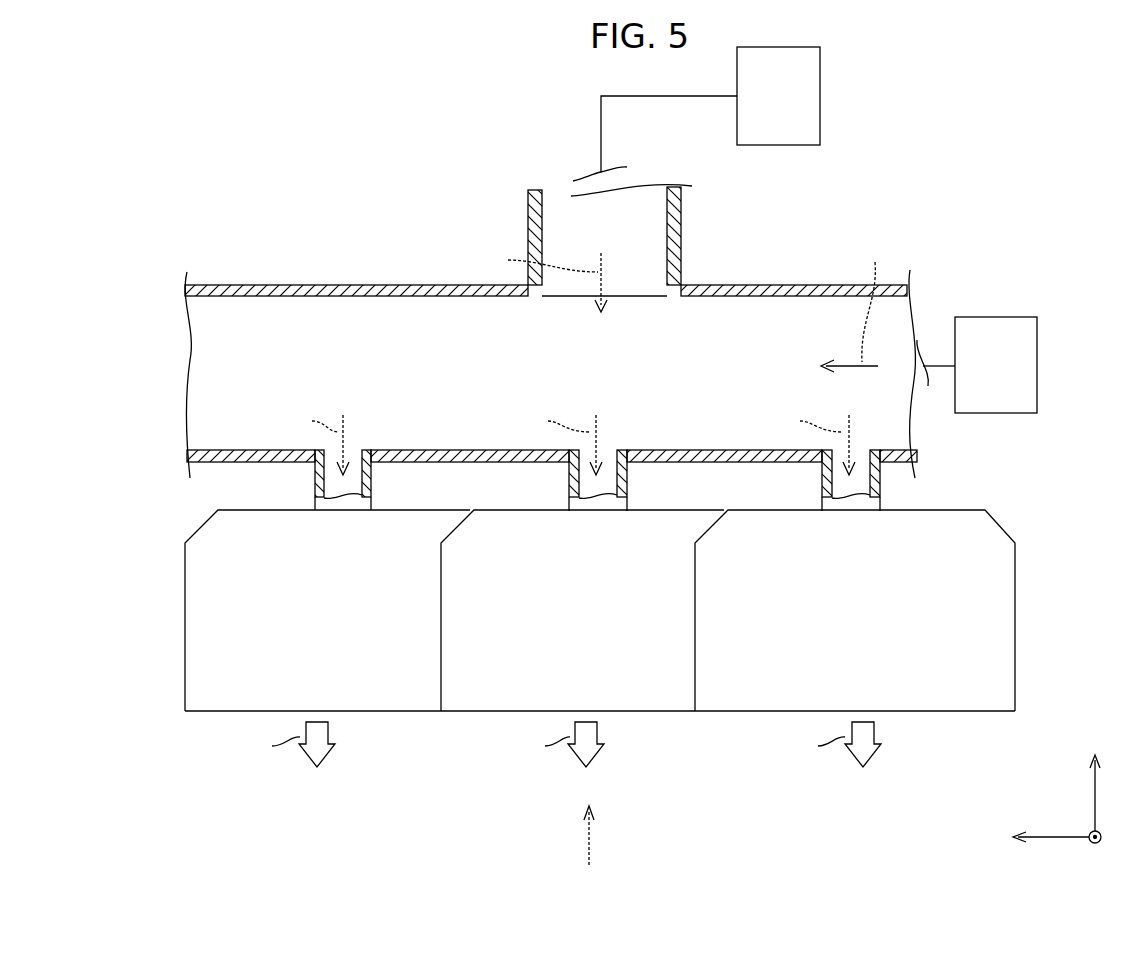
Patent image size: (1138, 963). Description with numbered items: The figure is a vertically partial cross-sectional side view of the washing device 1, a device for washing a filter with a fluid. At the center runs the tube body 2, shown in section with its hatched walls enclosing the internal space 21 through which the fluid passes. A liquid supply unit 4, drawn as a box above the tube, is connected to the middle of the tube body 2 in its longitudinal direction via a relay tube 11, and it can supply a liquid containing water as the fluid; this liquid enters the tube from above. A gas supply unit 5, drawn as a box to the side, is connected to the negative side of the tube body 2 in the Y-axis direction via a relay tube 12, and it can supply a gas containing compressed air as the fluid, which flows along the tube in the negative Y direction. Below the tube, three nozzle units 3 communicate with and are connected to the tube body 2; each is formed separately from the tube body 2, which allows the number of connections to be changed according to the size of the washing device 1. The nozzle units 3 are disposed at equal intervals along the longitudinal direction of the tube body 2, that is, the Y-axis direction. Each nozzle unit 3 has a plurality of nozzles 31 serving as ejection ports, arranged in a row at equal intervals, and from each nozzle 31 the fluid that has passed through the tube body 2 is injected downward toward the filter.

The washing device 1 is at (944, 177).
The tube body 2 is at (778, 282).
The nozzle unit 3 is at (600, 629).
The liquid supply unit 4 is at (805, 110).
The gas supply unit 5 is at (1025, 372).
The relay tube 11 is at (600, 146).
The relay tube 12 is at (943, 368).
The internal space 21 is at (350, 353).
The nozzle 31 is at (600, 759).